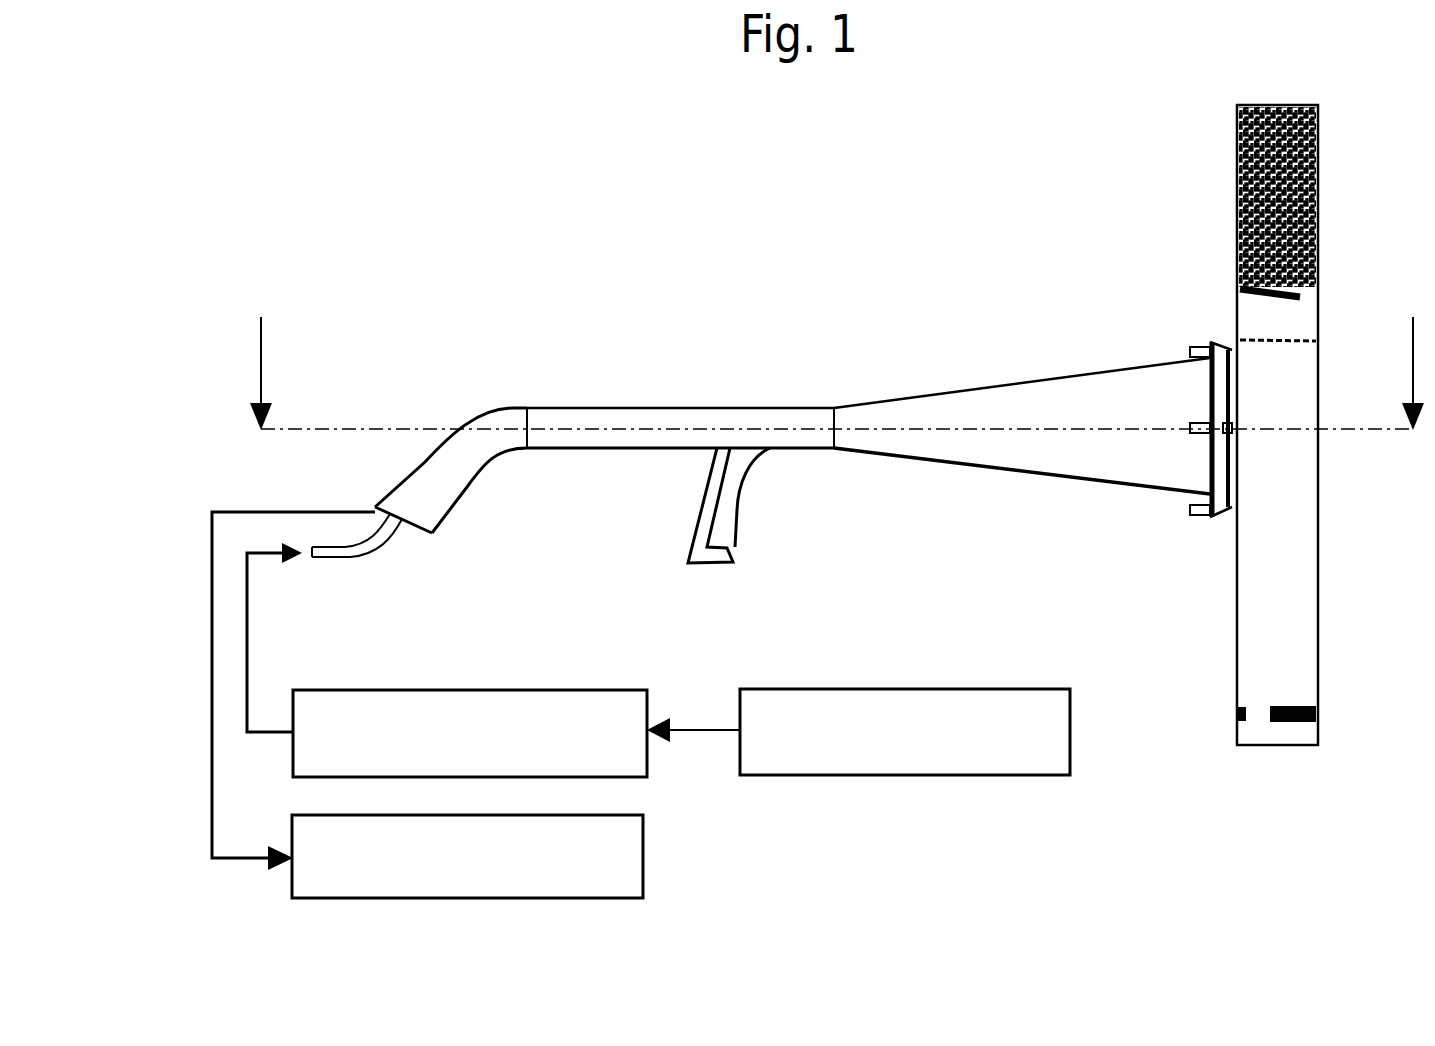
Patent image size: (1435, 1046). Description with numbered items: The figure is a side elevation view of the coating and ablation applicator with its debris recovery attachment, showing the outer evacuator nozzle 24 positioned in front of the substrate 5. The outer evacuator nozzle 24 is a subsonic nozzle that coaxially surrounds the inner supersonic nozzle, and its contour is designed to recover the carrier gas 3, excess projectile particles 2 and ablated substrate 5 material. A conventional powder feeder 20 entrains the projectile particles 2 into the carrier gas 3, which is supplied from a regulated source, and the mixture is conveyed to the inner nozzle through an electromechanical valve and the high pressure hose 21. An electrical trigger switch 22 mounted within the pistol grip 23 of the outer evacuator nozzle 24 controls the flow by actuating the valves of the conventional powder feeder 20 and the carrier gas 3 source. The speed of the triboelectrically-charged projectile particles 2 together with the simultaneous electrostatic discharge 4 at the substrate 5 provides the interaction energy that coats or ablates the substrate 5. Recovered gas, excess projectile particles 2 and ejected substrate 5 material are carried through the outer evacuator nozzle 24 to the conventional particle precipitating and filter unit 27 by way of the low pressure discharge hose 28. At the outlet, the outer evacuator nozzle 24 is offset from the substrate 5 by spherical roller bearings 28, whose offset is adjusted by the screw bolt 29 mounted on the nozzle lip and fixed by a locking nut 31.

The projectile particles 2 is at (470, 741).
The carrier gas 3 is at (903, 689).
The electrostatic discharge 4 is at (837, 341).
The substrate 5 is at (1236, 198).
The conventional powder feeder 20 is at (447, 660).
The high pressure hose 21 is at (363, 558).
The electrical trigger switch 22 is at (738, 533).
The pistol grip 23 is at (688, 563).
The outer evacuator nozzle 24 is at (948, 465).
The conventional particle precipitating and filter unit 27 is at (643, 870).
The low pressure discharge hose 28 is at (467, 487).
The screw bolt 29 is at (1190, 348).
The locking nut 31 is at (1213, 343).